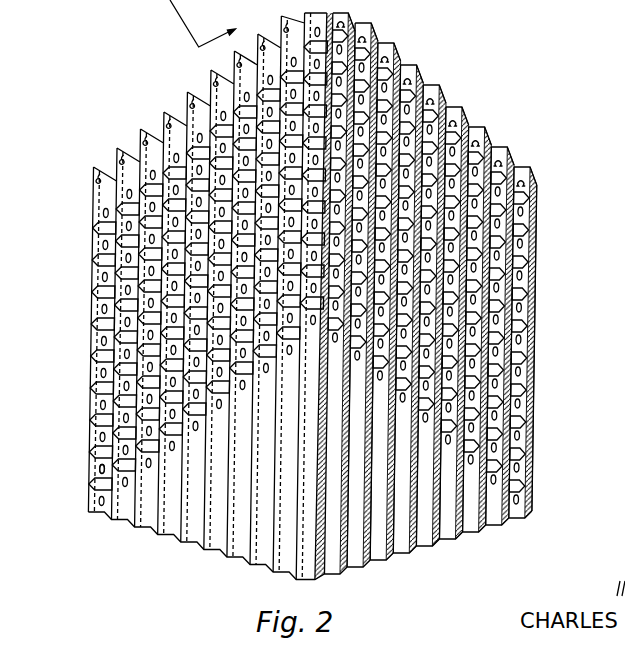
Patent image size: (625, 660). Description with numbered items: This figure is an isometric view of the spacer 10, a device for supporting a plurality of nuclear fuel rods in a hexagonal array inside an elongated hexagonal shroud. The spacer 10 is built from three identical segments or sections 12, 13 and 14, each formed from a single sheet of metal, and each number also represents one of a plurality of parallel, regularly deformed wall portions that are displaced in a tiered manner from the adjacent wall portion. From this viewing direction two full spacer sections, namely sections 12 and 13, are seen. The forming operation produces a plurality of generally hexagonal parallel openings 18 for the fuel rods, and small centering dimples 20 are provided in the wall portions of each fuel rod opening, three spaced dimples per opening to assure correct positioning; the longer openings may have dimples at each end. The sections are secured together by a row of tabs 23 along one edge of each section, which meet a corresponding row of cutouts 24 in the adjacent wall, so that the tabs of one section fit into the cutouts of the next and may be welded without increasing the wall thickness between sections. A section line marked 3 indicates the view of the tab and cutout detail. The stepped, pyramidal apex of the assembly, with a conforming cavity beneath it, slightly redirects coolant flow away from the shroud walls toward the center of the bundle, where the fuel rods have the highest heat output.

The section line for FIG. 3 is at (209, 23).
The spacer 10 is at (306, 290).
The spacer section 12 is at (541, 241).
The spacer section 13 is at (96, 240).
The spacer section 14 is at (317, 14).
The hexagonal parallel openings 18 is at (531, 190).
The centering dimples 20 is at (108, 466).
The tabs 23 is at (188, 92).
The cutouts 24 is at (440, 93).